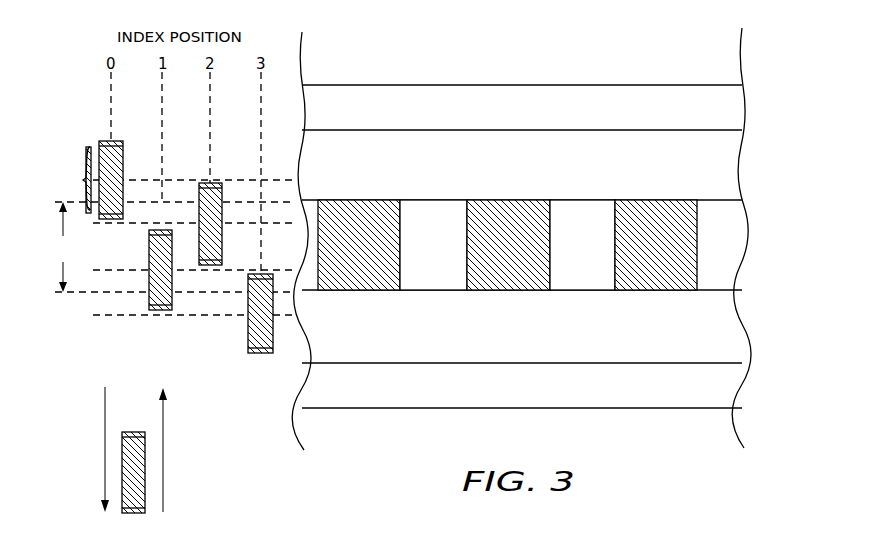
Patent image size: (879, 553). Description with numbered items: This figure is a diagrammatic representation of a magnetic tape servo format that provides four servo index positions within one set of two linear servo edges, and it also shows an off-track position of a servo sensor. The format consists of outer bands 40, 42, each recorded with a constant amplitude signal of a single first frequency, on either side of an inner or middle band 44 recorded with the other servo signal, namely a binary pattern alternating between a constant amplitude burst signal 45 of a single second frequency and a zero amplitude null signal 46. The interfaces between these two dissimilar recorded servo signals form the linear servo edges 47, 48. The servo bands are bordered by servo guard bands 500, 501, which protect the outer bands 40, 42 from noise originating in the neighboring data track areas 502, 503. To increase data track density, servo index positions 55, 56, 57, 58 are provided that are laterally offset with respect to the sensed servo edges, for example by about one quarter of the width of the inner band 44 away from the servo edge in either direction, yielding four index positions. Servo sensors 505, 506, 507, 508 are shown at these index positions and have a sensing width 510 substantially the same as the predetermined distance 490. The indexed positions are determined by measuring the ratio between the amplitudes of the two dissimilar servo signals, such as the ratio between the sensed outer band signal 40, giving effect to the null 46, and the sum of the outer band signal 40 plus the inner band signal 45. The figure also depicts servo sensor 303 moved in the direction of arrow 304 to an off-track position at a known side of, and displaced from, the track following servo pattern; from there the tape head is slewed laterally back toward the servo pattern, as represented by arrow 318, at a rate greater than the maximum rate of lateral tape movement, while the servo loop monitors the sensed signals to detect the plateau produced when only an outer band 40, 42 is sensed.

The outer band 40 is at (741, 166).
The outer band 42 is at (741, 333).
The inner band 44 is at (549, 248).
The constant amplitude burst signal 45 is at (355, 201).
The zero amplitude null signal 46 is at (432, 291).
The linear servo edge 47 is at (580, 201).
The linear servo edge 48 is at (583, 291).
The servo index position 55 is at (248, 178).
The servo index position 56 is at (133, 225).
The servo index position 57 is at (117, 270).
The servo index position 58 is at (215, 315).
The servo sensor 303 is at (135, 432).
The arrow 304 is at (105, 450).
The arrow 318 is at (163, 450).
The predetermined distance 490 is at (62, 247).
The servo guard band 500 is at (740, 106).
The servo guard band 501 is at (741, 390).
The data track area 502 is at (740, 63).
The data track area 503 is at (741, 433).
The servo sensor 505 is at (110, 140).
The servo sensor 506 is at (163, 311).
The servo sensor 507 is at (205, 182).
The servo sensor 508 is at (257, 354).
The sensing width 510 is at (69, 180).